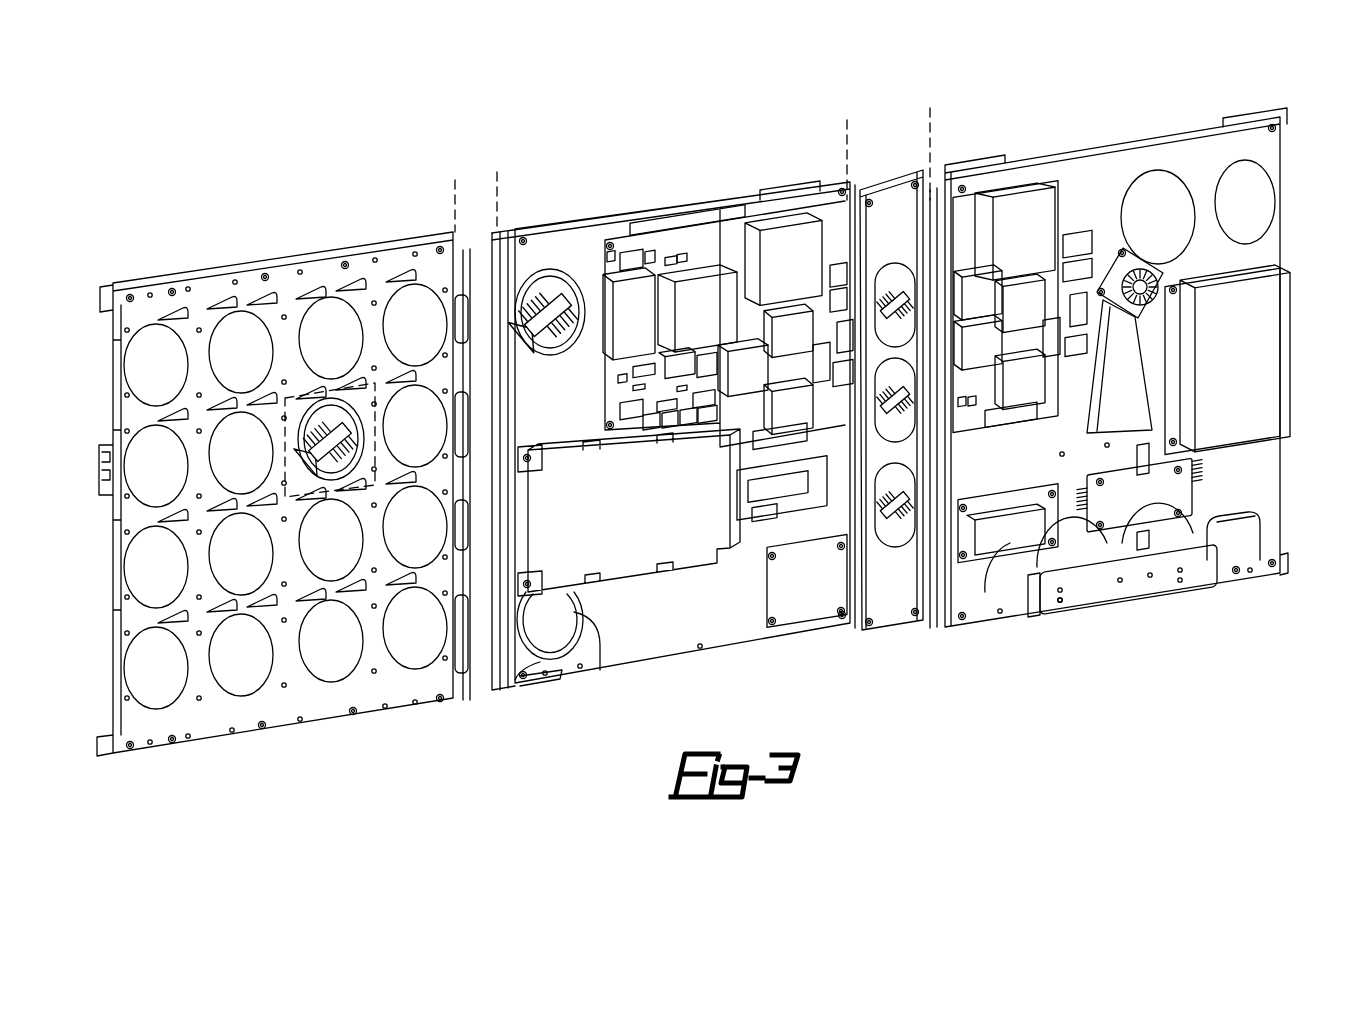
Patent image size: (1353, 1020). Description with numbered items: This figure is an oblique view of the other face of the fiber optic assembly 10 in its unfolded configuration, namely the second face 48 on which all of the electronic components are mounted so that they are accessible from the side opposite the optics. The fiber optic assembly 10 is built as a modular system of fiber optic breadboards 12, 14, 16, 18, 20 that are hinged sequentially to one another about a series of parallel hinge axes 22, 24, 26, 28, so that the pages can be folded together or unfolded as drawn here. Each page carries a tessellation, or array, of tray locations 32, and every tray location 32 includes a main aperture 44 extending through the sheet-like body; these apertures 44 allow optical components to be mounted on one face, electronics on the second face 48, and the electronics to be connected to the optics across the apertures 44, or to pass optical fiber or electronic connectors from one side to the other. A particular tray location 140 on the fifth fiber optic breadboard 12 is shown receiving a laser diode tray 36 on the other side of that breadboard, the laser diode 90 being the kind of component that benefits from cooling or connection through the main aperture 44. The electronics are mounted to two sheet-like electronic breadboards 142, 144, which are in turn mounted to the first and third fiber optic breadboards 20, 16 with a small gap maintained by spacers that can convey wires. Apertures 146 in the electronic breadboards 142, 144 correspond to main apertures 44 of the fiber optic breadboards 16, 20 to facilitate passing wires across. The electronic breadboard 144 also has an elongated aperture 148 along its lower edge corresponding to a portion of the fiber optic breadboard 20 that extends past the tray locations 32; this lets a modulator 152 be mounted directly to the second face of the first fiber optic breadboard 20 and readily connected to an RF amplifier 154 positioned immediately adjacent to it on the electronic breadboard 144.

The fiber optic assembly 10 is at (622, 143).
The fifth fiber optic breadboard 12 is at (216, 733).
The fiber optic breadboard 14 is at (455, 708).
The third fiber optic breadboard 16 is at (533, 686).
The fiber optic breadboard 18 is at (893, 604).
The first fiber optic breadboard 20 is at (985, 605).
The hinge axis 22 is at (447, 738).
The hinge axis 24 is at (497, 737).
The hinge axis 26 is at (848, 655).
The hinge axis 28 is at (930, 650).
The tray locations 32 is at (393, 320).
The laser diode tray 36 is at (300, 458).
The main aperture 44 is at (372, 460).
The second face 48 is at (199, 348).
The laser diode 90 is at (330, 478).
The tray location 140 is at (292, 410).
The electronic breadboard 142 is at (673, 653).
The electronic breadboard 144 is at (1272, 530).
The apertures 146 is at (1162, 178).
The elongated aperture 148 is at (1205, 527).
The modulator 152 is at (1150, 594).
The RF amplifier 154 is at (1162, 499).